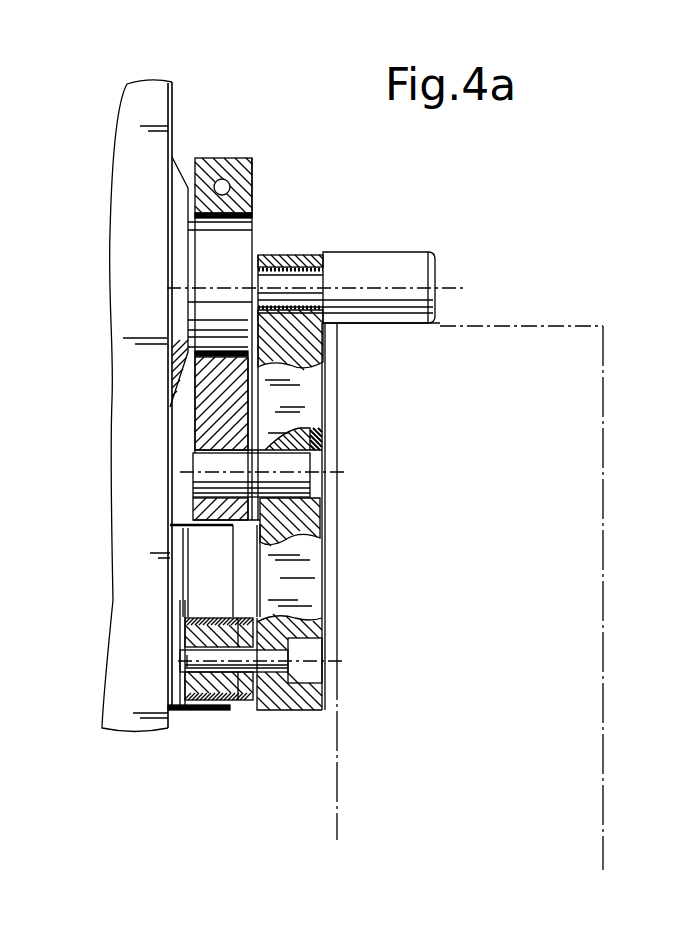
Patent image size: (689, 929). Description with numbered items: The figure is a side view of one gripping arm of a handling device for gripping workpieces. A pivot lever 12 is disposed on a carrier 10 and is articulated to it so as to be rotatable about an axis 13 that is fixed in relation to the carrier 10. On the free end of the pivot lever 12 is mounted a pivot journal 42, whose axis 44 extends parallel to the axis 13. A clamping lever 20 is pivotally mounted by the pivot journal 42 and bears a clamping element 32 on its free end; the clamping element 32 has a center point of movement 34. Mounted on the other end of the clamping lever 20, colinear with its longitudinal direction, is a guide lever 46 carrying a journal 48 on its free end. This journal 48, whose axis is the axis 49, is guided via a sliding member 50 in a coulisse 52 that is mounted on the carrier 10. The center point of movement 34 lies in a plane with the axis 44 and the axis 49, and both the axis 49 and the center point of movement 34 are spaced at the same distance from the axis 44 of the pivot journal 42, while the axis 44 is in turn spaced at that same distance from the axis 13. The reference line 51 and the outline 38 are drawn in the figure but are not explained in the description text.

The carrier 10 is at (152, 108).
The pivot lever 12 is at (228, 152).
The axis 13 is at (167, 288).
The clamping lever 20 is at (308, 390).
The clamping element 32 is at (357, 258).
The center point of movement 34 is at (223, 660).
The housing outline 38 is at (497, 327).
The pivot journal 42 is at (297, 467).
The axis 44 is at (197, 470).
The guide lever 46 is at (300, 560).
The journal 48 is at (195, 706).
The axis 49 is at (327, 663).
The sliding member 50 is at (218, 690).
The axis line 51 is at (307, 548).
The coulisse 52 is at (247, 700).